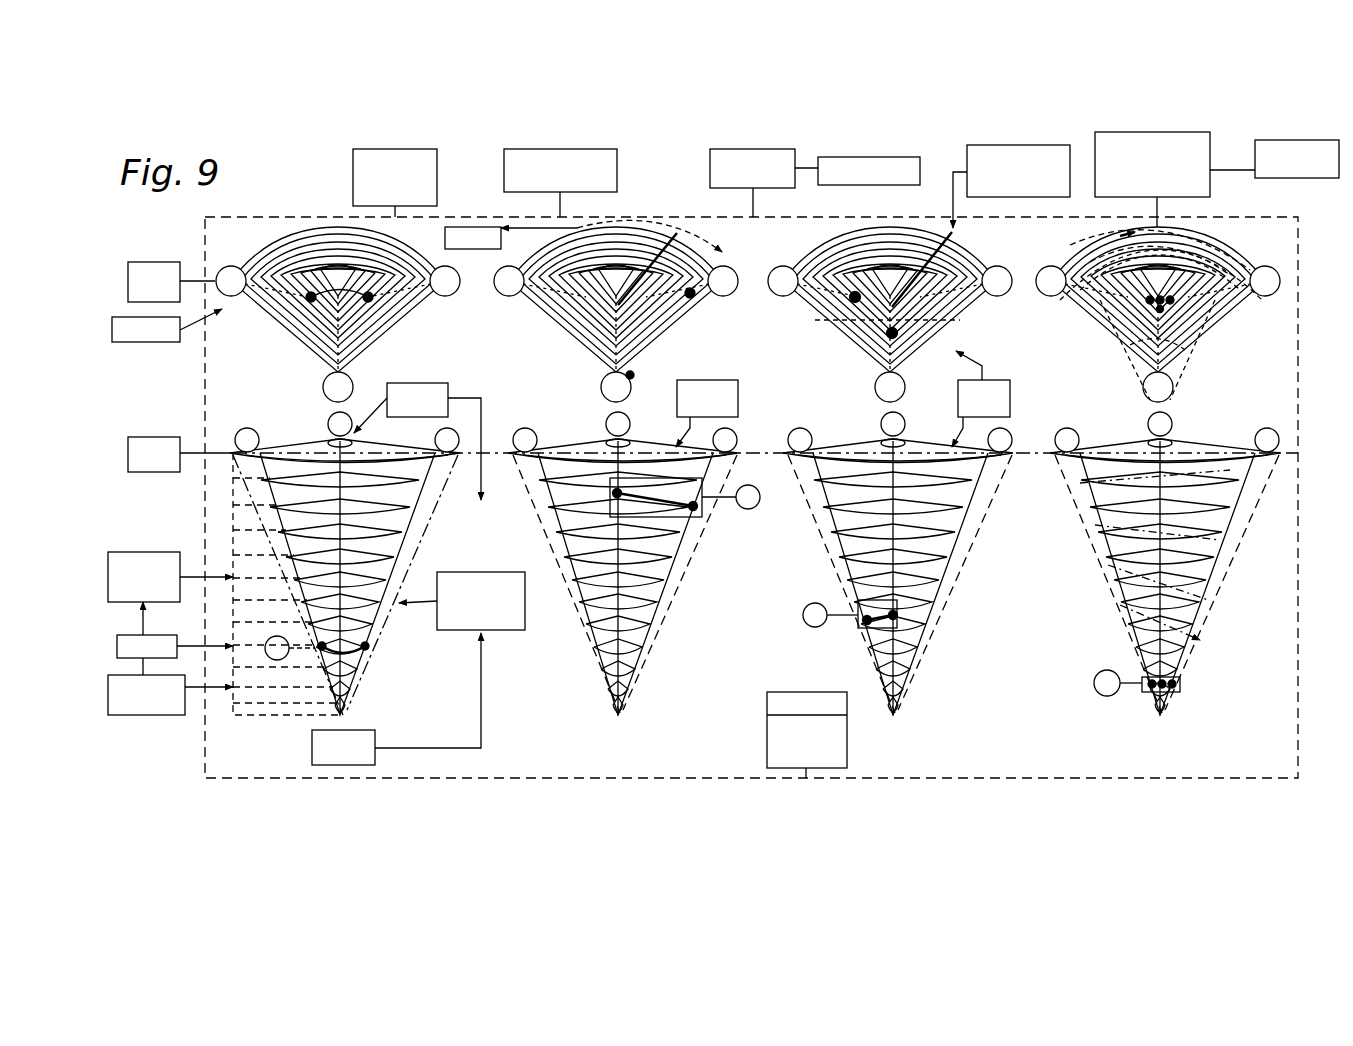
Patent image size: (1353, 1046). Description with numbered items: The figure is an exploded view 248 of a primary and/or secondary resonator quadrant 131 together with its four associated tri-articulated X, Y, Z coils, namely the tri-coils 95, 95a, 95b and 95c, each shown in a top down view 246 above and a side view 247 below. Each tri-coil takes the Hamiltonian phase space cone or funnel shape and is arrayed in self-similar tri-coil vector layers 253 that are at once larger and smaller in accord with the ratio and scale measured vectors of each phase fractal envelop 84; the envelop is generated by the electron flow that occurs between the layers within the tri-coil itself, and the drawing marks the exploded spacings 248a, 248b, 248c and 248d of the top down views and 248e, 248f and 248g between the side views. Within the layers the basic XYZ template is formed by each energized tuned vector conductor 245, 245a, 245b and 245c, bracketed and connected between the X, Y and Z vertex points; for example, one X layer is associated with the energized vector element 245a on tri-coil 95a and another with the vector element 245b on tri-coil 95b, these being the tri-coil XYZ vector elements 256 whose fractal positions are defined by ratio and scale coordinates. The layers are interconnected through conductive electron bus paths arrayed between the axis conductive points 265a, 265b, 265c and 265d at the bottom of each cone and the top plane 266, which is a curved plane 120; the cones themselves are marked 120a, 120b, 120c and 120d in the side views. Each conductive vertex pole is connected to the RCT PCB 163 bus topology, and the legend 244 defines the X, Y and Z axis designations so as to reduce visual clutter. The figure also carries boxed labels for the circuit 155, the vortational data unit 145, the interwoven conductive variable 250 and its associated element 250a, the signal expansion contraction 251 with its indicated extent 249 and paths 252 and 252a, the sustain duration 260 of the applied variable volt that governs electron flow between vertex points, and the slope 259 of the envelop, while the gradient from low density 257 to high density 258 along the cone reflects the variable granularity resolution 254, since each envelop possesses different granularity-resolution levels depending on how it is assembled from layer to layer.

The phase fractal envelop 84 is at (353, 199).
The vortational data unit 145 is at (503, 199).
The exploded view 248 is at (708, 199).
The resonator quadrant 131 is at (869, 185).
The interwoven conductive variable 250 is at (966, 161).
The signal expansion contraction 251 is at (1218, 210).
The sustain duration 260 is at (1297, 180).
The top down view 246 is at (170, 258).
The circuit 155 is at (156, 345).
The side view 247 is at (170, 430).
The tri-coil vector layers 253 is at (160, 545).
The interwoven conductive variable layer 250a is at (216, 631).
The tri-coil XYZ vector elements 256 is at (136, 718).
The high density 258 is at (312, 763).
The low density 257 is at (422, 372).
The slope 259 is at (498, 262).
The variable granularity resolution 254 is at (525, 632).
The legend 244 is at (820, 692).
The top plane 266 is at (946, 414).
The curved plane 120 is at (678, 424).
The signal expansion contraction path 252 is at (1110, 238).
The signal expansion contraction path in side view 252a is at (1218, 555).
The expansion contraction extent 249 is at (1208, 364).
The tri-articulated X, Y, Z coil 95 is at (1121, 372).
The tri-coil 95a is at (297, 379).
The tri-coil 95b is at (573, 379).
The tri-coil 95c is at (852, 379).
The RCT PCB 163 is at (250, 244).
The energized tuned vector conductor 245 is at (1218, 338).
The energized vector element 245a is at (385, 336).
The energized vector element 245b is at (682, 327).
The energized tuned vector conductor 245c is at (950, 346).
The exploded view dimension a 248a is at (222, 320).
The exploded view dimension b 248b is at (493, 320).
The exploded view dimension c 248c is at (772, 320).
The exploded view dimension d 248d is at (1043, 320).
The exploded view spacing e 248e is at (524, 531).
The exploded view spacing f 248f is at (812, 531).
The exploded view spacing g 248g is at (1079, 531).
The curved plane cone a 120a is at (352, 693).
The curved plane cone b 120b is at (628, 695).
The curved plane cone c 120c is at (903, 695).
The curved plane cone d 120d is at (1167, 697).
The originating axis point 265a is at (345, 718).
The axis conductive point 265b is at (622, 718).
The axis conductive point 265c is at (902, 715).
The axis conductive point 265d is at (1167, 712).